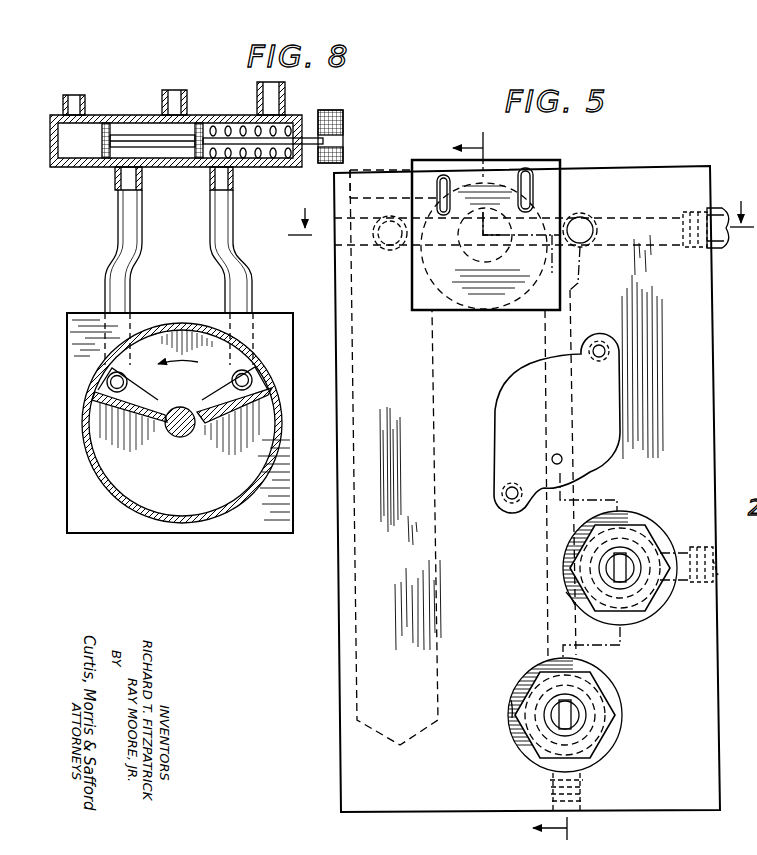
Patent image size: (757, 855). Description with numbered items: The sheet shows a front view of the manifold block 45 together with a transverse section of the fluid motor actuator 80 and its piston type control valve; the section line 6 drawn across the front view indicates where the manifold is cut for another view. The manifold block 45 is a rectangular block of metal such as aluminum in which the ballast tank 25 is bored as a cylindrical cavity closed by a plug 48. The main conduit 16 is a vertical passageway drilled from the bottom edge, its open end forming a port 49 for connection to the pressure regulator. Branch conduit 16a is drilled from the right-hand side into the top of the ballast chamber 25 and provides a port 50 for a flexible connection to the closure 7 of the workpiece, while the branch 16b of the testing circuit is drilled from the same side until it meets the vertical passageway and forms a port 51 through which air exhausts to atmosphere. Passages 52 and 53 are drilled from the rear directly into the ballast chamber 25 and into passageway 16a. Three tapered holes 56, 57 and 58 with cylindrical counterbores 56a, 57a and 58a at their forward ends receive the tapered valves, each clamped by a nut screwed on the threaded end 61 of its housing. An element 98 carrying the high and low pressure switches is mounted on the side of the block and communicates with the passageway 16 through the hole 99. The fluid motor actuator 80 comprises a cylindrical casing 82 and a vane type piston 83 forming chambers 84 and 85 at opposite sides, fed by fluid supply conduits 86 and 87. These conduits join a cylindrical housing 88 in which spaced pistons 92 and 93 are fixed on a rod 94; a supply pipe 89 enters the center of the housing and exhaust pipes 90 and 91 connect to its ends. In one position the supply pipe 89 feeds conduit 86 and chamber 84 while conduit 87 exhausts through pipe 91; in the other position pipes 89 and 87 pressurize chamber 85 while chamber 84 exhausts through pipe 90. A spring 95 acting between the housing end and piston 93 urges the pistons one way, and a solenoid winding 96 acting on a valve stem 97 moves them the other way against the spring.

In FIG. 5, the section line 6- 6 is at (508, 488).
In FIG. 8, the closure 7 is at (300, 209).
In FIG. 5, the closure 7 is at (742, 201).
In FIG. 5, the main conduit 16 is at (560, 342).
In FIG. 5, the branch conduit 16a is at (645, 250).
In FIG. 5, the branch of fluid testing circuit 16b is at (693, 547).
In FIG. 5, the ballast tank 25 is at (362, 682).
In FIG. 5, the manifold block 45 is at (336, 598).
In FIG. 5, the plug 48 is at (388, 177).
In FIG. 5, the port 49 is at (582, 806).
In FIG. 5, the port 50 is at (714, 249).
In FIG. 5, the port 51 is at (715, 579).
In FIG. 5, the passage 52 is at (391, 251).
In FIG. 5, the passage 53 is at (584, 257).
In FIG. 5, the tapered hole 56 is at (520, 684).
In FIG. 5, the cylindrical counterbore 56a is at (515, 706).
In FIG. 5, the tapered hole 57 is at (578, 562).
In FIG. 5, the cylindrical counterbore 57a is at (568, 595).
In FIG. 5, the tapered hole 58 is at (500, 177).
In FIG. 5, the cylindrical counterbore 58a is at (438, 314).
In FIG. 5, the threaded smaller end 61 is at (590, 698).
In FIG. 8, the mechanical actuator 80 is at (128, 500).
In FIG. 5, the mechanical actuator 80 is at (560, 170).
In FIG. 8, the cylindrical casing 82 is at (268, 372).
In FIG. 8, the vane type piston 83 is at (247, 348).
In FIG. 8, the chamber 84 is at (166, 393).
In FIG. 8, the chamber 85 is at (222, 400).
In FIG. 8, the fluid supply conduit 86 is at (105, 296).
In FIG. 5, the fluid supply conduit 86 is at (437, 195).
In FIG. 8, the fluid supply conduit 87 is at (254, 292).
In FIG. 5, the fluid supply conduit 87 is at (533, 190).
In FIG. 8, the cylindrical housing 88 is at (76, 167).
In FIG. 8, the supply pipe 89 is at (163, 97).
In FIG. 8, the exhaust pipe 90 is at (64, 105).
In FIG. 8, the exhaust pipe 91 is at (258, 94).
In FIG. 8, the piston 92 is at (106, 122).
In FIG. 8, the piston 93 is at (200, 122).
In FIG. 8, the rod 94 is at (177, 148).
In FIG. 8, the spring 95 is at (287, 114).
In FIG. 8, the solenoid winding 96 is at (332, 110).
In FIG. 8, the valve stem 97 is at (338, 141).
In FIG. 5, the element 98 is at (505, 437).
In FIG. 5, the hole 99 is at (563, 460).